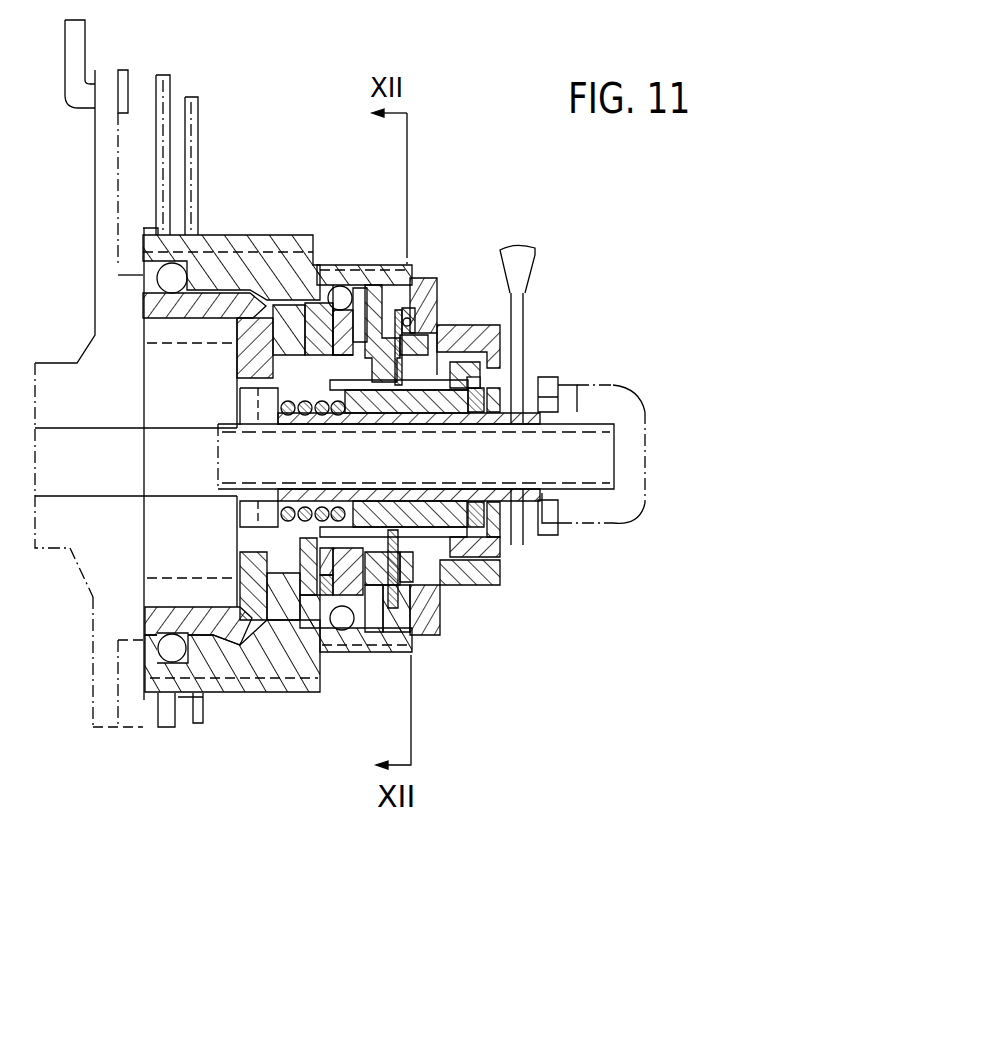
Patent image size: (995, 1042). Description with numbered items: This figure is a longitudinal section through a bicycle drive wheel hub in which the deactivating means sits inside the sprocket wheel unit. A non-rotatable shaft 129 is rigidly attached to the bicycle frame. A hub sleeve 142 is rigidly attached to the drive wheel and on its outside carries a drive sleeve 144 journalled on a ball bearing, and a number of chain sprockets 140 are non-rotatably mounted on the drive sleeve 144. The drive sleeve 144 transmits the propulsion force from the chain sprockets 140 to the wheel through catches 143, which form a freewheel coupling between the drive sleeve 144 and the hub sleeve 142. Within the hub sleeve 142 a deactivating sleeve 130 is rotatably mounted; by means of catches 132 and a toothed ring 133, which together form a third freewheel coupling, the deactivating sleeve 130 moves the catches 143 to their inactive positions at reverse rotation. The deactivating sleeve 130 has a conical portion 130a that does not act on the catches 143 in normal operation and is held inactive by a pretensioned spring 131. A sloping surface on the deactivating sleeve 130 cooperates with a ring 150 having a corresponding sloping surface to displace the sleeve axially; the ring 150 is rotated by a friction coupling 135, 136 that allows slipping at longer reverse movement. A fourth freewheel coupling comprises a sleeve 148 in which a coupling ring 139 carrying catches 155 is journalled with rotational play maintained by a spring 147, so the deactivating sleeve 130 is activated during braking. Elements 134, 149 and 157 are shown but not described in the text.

The non-rotatable shaft 129 is at (597, 455).
The deactivating sleeve 130 is at (267, 617).
The conical portion 130a is at (327, 310).
The pretensioned spring 131 is at (283, 408).
The catches 132 is at (382, 647).
The toothed ring 133 is at (500, 546).
The lower flange ring 134 is at (624, 522).
The friction coupling 135 is at (503, 378).
The friction coupling 136 is at (550, 390).
The coupling ring 139 is at (412, 318).
The chain sprockets 140 is at (190, 95).
The hub sleeve 142 is at (160, 308).
The catches 143 is at (285, 300).
The drive sleeve 144 is at (143, 250).
The spring 147 is at (420, 300).
The sleeve 148 is at (425, 593).
The upper flange ring 149 is at (630, 391).
The ring 150 is at (502, 387).
The catches 155 is at (413, 510).
The seal carrier 157 is at (436, 350).